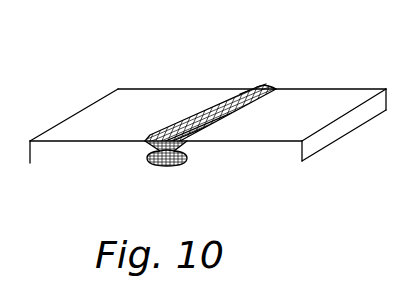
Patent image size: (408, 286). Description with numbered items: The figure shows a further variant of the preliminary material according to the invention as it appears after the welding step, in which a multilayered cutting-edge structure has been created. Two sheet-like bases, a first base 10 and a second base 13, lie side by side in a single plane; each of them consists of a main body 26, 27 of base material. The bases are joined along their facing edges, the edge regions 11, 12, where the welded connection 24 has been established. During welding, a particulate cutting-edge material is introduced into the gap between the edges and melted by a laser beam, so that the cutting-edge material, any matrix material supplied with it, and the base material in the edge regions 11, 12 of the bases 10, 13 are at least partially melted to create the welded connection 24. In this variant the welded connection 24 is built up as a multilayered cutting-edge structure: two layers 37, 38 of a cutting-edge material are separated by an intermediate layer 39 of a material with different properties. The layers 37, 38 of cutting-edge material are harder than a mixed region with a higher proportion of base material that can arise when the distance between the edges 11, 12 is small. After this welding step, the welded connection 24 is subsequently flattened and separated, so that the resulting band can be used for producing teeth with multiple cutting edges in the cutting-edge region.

The first base 10 is at (115, 110).
The second base 13 is at (312, 105).
The welded connection 24 is at (180, 110).
The main body 26 is at (70, 152).
The main body 27 is at (270, 153).
The edge region 11 is at (147, 150).
The edge region 12 is at (188, 152).
The layer of cutting-edge material 37 is at (271, 90).
The layer of cutting-edge material 38 is at (244, 88).
The layer of a material with different properties 39 is at (264, 89).